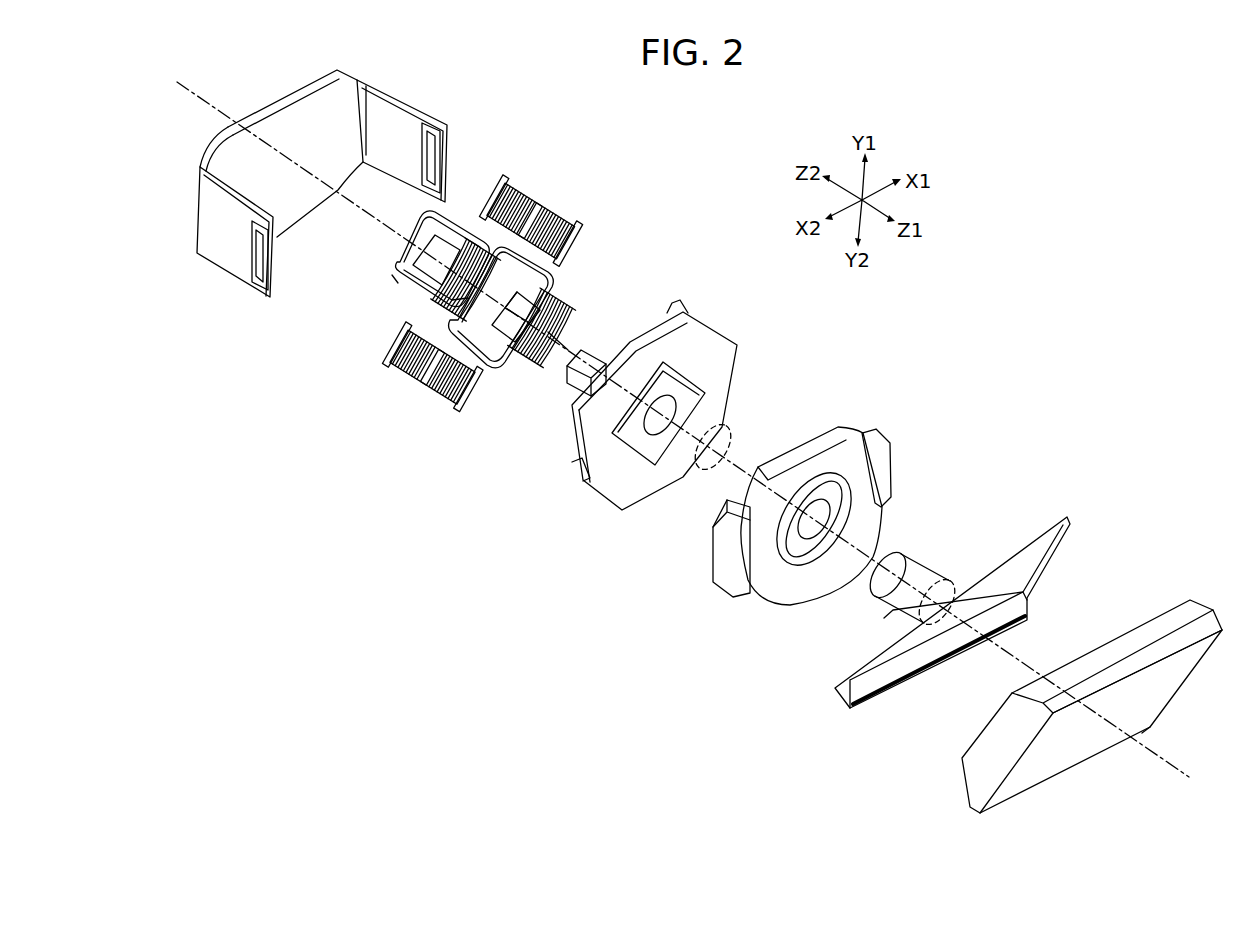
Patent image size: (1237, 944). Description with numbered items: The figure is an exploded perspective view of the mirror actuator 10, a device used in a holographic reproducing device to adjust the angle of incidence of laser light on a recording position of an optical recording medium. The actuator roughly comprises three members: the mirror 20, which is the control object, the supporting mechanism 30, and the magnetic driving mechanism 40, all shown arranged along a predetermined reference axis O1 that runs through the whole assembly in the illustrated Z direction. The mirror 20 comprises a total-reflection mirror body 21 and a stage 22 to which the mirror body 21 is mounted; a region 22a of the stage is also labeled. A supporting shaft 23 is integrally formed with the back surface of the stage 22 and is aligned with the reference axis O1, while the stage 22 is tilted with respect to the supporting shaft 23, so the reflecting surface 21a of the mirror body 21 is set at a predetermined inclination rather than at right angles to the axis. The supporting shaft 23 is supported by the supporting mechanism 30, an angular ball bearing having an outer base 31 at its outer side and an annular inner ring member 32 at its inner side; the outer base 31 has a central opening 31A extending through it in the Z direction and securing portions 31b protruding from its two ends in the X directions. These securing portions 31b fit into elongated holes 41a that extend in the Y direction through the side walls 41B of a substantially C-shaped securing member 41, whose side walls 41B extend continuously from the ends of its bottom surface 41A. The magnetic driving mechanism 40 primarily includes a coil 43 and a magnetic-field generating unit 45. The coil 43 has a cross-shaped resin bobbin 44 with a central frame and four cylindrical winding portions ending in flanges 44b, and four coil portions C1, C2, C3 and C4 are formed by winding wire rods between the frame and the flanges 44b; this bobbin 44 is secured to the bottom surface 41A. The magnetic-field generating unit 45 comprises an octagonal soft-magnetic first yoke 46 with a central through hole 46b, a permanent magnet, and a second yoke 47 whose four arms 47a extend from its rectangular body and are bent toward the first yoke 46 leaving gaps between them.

The mirror actuator 10 is at (986, 386).
The mirror 20 is at (933, 848).
The mirror body 21 is at (1067, 709).
The reflecting surface 21a is at (1087, 747).
The stage 22 is at (978, 644).
The rim portion of plate 22a is at (1038, 558).
The supporting shaft 23 is at (730, 428).
The supporting mechanism 30 is at (652, 622).
The outer base 31 is at (806, 553).
The opening 31A is at (852, 496).
The securing portions 31b is at (890, 462).
The inner ring member 32 is at (797, 573).
The magnetic driving mechanism 40 is at (123, 300).
The securing member 41 is at (311, 193).
The bottom surface 41A is at (288, 112).
The side walls 41B is at (396, 110).
The elongated holes 41a is at (437, 160).
The coil 43 is at (466, 327).
The bobbin 44 is at (557, 277).
The flanges 44b is at (393, 268).
The magnetic-field generating unit 45 is at (634, 406).
The first yoke 46 is at (679, 439).
The through hole 46b is at (672, 405).
The second yoke 47 is at (632, 315).
The arms 47a is at (681, 306).
The coil portion C1 is at (575, 214).
The coil portion C2 is at (398, 343).
The coil portion C3 is at (430, 302).
The coil portion C4 is at (518, 368).
The reference axis O1 is at (678, 434).
The Z direction Z is at (366, 202).